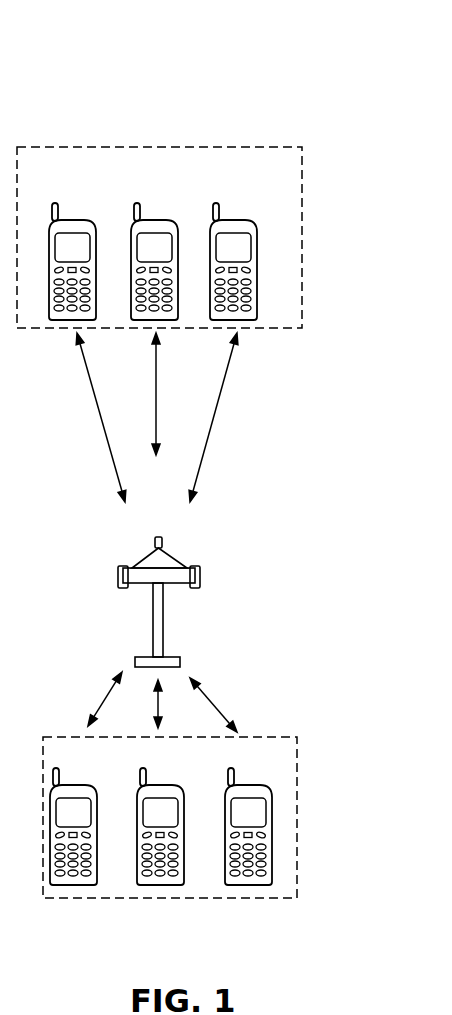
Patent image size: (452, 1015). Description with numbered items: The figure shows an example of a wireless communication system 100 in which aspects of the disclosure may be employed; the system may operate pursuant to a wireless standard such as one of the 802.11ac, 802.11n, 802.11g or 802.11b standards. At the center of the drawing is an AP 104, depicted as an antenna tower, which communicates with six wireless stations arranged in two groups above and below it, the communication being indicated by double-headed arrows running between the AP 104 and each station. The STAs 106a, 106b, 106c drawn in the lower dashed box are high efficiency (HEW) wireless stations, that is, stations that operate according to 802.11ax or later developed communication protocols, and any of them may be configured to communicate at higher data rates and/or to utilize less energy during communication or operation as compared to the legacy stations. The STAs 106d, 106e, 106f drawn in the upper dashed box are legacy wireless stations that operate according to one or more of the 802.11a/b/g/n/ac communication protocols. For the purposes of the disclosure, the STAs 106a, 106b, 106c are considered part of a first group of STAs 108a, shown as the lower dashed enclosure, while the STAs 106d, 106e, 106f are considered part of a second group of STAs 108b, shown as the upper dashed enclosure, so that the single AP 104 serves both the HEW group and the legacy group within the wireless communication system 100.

The wireless communication system 100 is at (336, 86).
The AP 104 is at (157, 536).
The STA 106a is at (81, 785).
The STA 106b is at (168, 785).
The STA 106c is at (256, 785).
The STA 106d is at (78, 220).
The STA 106e is at (161, 220).
The STA 106f is at (241, 220).
The first group of STAs 108a is at (285, 900).
The second group of STAs 108b is at (287, 332).